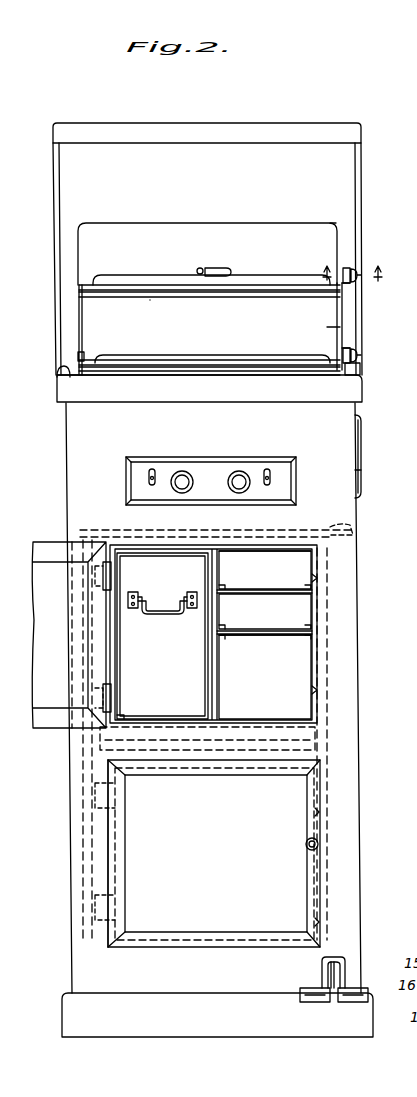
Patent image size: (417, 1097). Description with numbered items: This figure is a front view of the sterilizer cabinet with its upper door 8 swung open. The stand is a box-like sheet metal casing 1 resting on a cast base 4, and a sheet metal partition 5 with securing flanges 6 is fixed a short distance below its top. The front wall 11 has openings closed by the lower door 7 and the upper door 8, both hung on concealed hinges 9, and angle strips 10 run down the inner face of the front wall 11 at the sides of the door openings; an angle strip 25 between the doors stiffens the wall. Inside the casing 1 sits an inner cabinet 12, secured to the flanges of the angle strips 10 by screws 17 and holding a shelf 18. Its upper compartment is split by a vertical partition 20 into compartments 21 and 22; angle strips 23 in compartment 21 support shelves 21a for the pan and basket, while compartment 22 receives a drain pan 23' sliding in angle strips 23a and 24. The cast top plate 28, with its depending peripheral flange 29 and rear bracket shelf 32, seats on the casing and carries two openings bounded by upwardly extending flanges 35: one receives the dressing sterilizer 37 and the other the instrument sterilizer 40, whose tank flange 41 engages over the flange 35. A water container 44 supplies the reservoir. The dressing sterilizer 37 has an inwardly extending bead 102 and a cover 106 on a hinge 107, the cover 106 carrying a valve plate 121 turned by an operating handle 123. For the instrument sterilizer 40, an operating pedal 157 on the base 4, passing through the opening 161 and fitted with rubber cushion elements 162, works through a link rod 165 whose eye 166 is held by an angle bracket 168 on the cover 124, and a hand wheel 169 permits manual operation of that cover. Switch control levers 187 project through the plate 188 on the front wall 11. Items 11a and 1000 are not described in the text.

The sheet metal casing 1 is at (367, 714).
The cast base 4 is at (146, 1028).
The sheet metal partition 5 is at (300, 530).
The securing flanges 6 is at (352, 524).
The lower door 7 is at (212, 856).
The upper door 8 is at (50, 728).
The concealed hinges 9 is at (120, 825).
The angle strips 10 is at (80, 533).
The front wall 11 is at (338, 788).
The guide 11a is at (361, 268).
The inner cabinet 12 is at (387, 456).
The screws 17 is at (100, 578).
The shelf 18 is at (386, 467).
The vertical partition 20 is at (218, 620).
The compartment 21 is at (281, 598).
The shelves 21a is at (265, 602).
The compartment 22 is at (183, 553).
The angle strips 23 is at (265, 624).
The drain pan 23' is at (162, 621).
The angle strip 23a is at (119, 716).
The angle strip 24 is at (205, 706).
The angle strip 25 is at (177, 740).
The cast top plate 28 is at (200, 375).
The depending peripheral flange 29 is at (360, 430).
The bracket shelf 32 is at (362, 170).
The upwardly extending flanges 35 is at (114, 372).
The dressing sterilizer 37 is at (150, 302).
The instrument sterilizer 40 is at (220, 348).
The flange 41 is at (262, 372).
The water container 44 is at (297, 230).
The inwardly extending bead 102 is at (88, 296).
The cover 106 is at (207, 254).
The hinge 107 is at (80, 286).
The valve plate 121 is at (196, 272).
The operating handle 123 is at (222, 268).
The cover 124 is at (284, 366).
The operating pedal 157 is at (330, 968).
The opening 161 is at (345, 958).
The rubber cushion elements 162 is at (357, 1002).
The link rod 165 is at (352, 315).
The eye 166 is at (347, 268).
The angle bracket 168 is at (336, 270).
The hand wheel 169 is at (360, 270).
The control lever 187 is at (152, 468).
The plate 188 is at (126, 481).
The panel 1000 is at (327, 327).